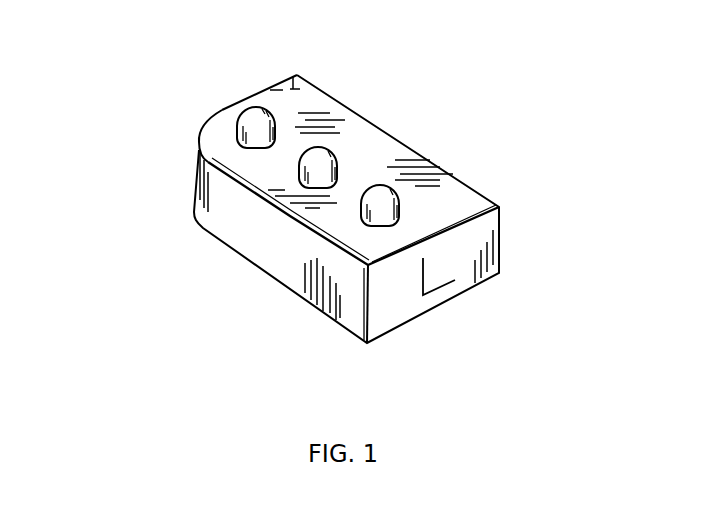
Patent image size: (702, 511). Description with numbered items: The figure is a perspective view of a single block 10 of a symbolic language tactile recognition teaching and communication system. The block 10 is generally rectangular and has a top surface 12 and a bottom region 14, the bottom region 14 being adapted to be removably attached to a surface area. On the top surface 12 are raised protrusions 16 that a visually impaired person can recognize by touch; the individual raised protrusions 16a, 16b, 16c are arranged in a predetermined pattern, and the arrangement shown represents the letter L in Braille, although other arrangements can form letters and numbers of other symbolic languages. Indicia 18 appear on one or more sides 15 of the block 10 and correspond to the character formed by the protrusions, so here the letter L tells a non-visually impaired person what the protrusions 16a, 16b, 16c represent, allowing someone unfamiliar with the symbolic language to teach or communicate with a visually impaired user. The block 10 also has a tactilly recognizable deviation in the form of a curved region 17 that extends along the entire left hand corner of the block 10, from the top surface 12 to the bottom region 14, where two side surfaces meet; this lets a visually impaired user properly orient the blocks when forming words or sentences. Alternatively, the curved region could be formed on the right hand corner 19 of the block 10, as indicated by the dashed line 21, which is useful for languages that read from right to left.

The block 10 is at (565, 134).
The top surface 12 is at (358, 123).
The bottom region 14 is at (284, 312).
The sides 15 is at (478, 230).
The raised protrusions 16 is at (232, 104).
The raised protrusion 16a is at (276, 113).
The raised protrusion 16b is at (339, 157).
The raised protrusion 16c is at (405, 206).
The curved region 17 is at (184, 188).
The indicia 18 is at (414, 289).
The right hand corner 19 is at (305, 63).
The dashed line 21 is at (293, 86).